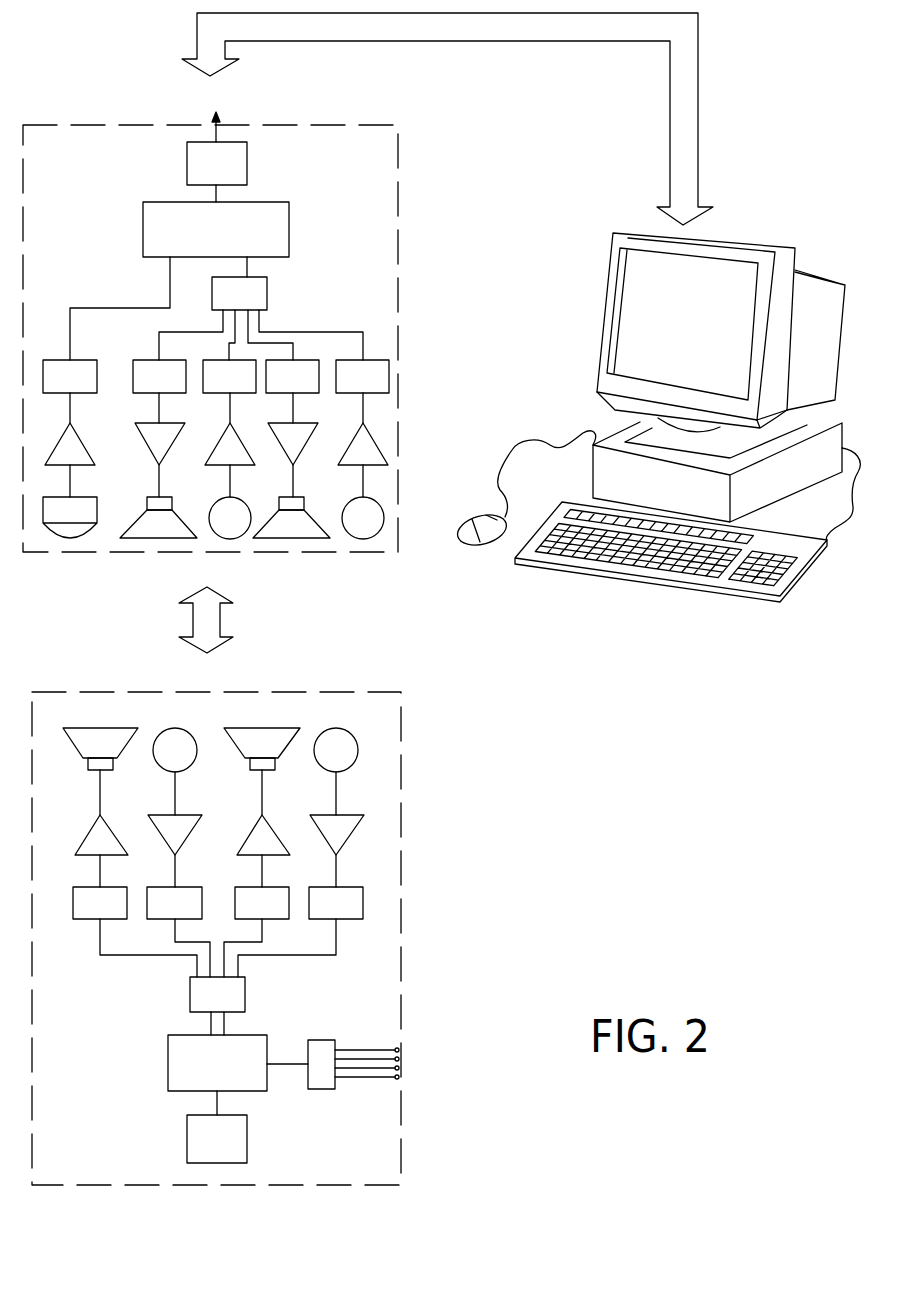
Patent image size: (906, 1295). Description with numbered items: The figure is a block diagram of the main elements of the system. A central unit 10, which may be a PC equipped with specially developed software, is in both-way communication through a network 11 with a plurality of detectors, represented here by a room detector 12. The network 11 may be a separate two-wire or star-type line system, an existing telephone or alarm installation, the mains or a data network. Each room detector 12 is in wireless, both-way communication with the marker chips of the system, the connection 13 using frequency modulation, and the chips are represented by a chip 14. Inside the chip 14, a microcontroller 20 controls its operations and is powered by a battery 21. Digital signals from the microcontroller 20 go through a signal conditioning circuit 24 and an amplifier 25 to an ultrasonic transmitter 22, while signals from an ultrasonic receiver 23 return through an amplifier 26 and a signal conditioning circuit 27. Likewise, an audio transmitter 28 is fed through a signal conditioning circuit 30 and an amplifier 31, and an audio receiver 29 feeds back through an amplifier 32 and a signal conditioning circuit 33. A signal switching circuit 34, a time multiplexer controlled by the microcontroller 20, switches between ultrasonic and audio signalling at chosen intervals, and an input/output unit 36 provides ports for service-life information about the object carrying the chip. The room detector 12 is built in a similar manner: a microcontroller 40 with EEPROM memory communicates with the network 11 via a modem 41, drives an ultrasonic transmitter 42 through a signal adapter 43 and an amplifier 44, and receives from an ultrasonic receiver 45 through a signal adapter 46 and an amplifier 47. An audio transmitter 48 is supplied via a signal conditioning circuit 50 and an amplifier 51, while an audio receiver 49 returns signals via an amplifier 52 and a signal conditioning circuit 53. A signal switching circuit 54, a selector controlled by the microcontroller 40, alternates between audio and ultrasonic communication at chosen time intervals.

The central unit 10 is at (550, 380).
The network 11 is at (466, 46).
The room detector 12 is at (414, 286).
The connection 13 is at (240, 620).
The marker chip 14 is at (413, 862).
The microcontroller 20 is at (178, 1072).
The battery 21 is at (188, 1146).
The ultrasonic transmitter 22 is at (78, 742).
The ultrasonic receiver 23 is at (158, 762).
The signal conditioning circuit 24 is at (88, 920).
The amplifier 25 is at (93, 830).
The amplifier 26 is at (165, 834).
The signal conditioning circuit 27 is at (163, 920).
The audio transmitter 28 is at (238, 742).
The audio receiver 29 is at (318, 762).
The signal conditioning circuit 30 is at (276, 920).
The amplifier 31 is at (253, 830).
The amplifier 32 is at (326, 834).
The signal conditioning circuit 33 is at (349, 920).
The signal switching circuit 34 is at (192, 993).
The input/output unit 36 is at (318, 1090).
The microcontroller 40 is at (143, 227).
The modem 41 is at (243, 154).
The ultrasonic transmitter 42 is at (138, 525).
The signal adapter 43 is at (140, 397).
The amplifier 44 is at (150, 447).
The ultrasonic receiver 45 is at (212, 508).
The signal adapter 46 is at (222, 444).
The amplifier 47 is at (210, 397).
The audio transmitter 48 is at (270, 526).
The audio receiver 49 is at (345, 508).
The signal conditioning circuit 50 is at (273, 397).
The amplifier 51 is at (285, 447).
The amplifier 52 is at (357, 444).
The signal conditioning circuit 53 is at (343, 397).
The signal switching circuit 54 is at (262, 294).